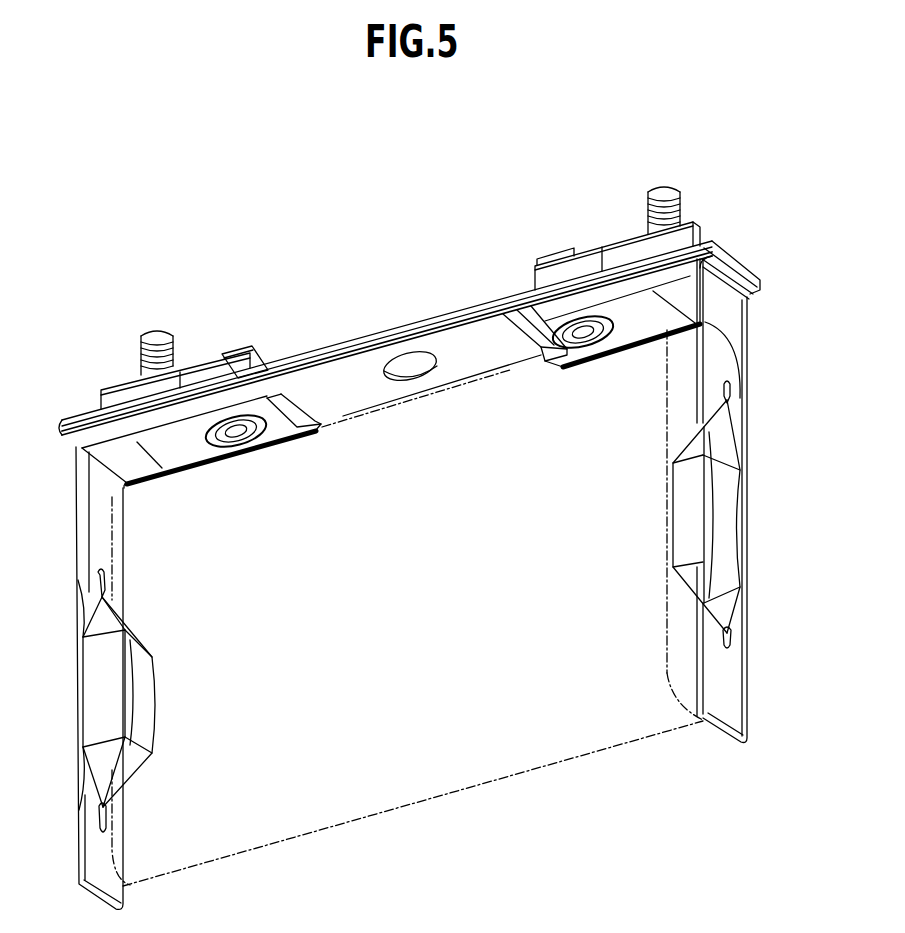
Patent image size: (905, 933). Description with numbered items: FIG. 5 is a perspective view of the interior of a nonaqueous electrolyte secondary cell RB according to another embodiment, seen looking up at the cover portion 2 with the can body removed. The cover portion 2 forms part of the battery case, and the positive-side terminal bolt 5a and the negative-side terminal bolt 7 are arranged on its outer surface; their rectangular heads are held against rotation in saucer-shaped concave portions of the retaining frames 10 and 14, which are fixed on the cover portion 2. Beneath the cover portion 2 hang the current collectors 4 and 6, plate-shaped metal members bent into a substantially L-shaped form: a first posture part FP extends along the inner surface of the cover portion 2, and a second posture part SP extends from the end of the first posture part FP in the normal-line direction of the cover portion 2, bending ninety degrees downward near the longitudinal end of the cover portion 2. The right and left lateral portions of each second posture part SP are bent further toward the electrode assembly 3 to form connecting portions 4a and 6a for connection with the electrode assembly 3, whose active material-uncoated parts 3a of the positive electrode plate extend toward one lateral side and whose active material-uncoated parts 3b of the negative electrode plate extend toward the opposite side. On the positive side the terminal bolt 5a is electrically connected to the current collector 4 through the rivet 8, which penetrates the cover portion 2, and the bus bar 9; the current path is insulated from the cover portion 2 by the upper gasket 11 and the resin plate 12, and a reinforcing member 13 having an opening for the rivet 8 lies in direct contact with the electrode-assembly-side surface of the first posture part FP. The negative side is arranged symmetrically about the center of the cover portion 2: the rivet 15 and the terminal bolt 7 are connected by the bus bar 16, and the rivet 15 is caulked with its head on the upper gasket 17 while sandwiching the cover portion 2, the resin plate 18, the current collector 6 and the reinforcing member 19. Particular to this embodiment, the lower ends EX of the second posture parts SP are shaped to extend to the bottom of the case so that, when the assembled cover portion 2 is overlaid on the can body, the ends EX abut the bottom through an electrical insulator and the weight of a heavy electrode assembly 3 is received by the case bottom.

The cover portion 2 is at (390, 332).
The electrode assembly 3 is at (430, 798).
The active material-uncoated parts of the positive electrode plate 3a is at (128, 678).
The active material-uncoated parts of the negative electrode plate 3b is at (670, 677).
The current collector 4 is at (160, 683).
The connecting portion 4a is at (150, 703).
The bolt (5) 5a is at (162, 318).
The current collector 6 is at (648, 488).
The connecting portion 6a is at (670, 560).
The terminal bolt 7 is at (654, 186).
The rivet 8 is at (243, 440).
The bus bar 9 is at (187, 368).
The retaining frame 10 is at (100, 408).
The upper gasket 11 is at (240, 363).
The resin plate 12 is at (323, 426).
The reinforcing member 13 is at (200, 457).
The retaining frame 14 is at (700, 236).
The rivet 15 is at (577, 343).
The bus bar 16 is at (626, 243).
The upper gasket 17 is at (537, 282).
The resin plate 18 is at (507, 356).
The reinforcing member 19 is at (637, 325).
The nonaqueous electrolyte secondary cell RB is at (294, 249).
The first posture part FP is at (137, 490).
The second posture part SP is at (133, 569).
The lower ends of the second posture parts EX is at (133, 906).